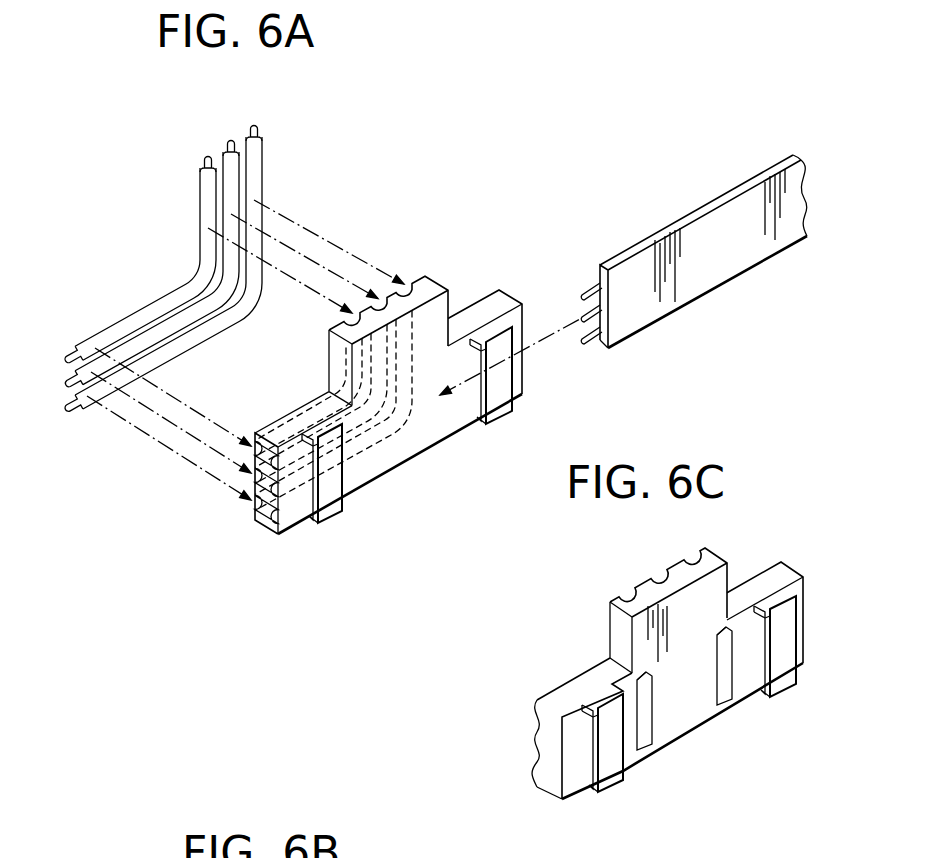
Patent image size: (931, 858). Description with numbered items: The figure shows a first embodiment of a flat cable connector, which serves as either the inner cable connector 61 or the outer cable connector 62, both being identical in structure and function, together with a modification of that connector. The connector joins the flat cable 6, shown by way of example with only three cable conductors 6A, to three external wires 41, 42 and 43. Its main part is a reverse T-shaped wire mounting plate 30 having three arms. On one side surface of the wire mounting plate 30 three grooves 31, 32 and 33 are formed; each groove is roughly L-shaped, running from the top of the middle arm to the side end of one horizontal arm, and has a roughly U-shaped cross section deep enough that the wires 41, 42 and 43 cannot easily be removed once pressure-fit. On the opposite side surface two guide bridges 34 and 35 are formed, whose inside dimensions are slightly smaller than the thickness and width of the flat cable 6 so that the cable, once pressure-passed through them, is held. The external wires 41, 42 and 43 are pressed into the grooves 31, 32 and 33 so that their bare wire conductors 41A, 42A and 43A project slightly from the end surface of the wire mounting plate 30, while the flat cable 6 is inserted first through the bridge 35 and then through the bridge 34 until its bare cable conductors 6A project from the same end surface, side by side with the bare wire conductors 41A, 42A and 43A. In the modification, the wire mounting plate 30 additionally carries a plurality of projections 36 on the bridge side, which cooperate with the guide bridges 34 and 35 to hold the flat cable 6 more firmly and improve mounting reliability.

In FIG. 6A, the flat cable 6 is at (685, 238).
In FIG. 6A, the cable conductors 6A is at (591, 286).
In FIG. 6A, the wire mounting plate 30 is at (346, 383).
In FIG. 6C, the wire mounting plate 30 is at (672, 650).
In FIG. 6A, the groove 31 is at (252, 453).
In FIG. 6A, the groove 32 is at (252, 483).
In FIG. 6A, the groove 33 is at (252, 508).
In FIG. 6A, the guide bridge 34 is at (320, 527).
In FIG. 6C, the guide bridge 34 is at (616, 784).
In FIG. 6A, the guide bridge 35 is at (491, 426).
In FIG. 6C, the guide bridge 35 is at (787, 698).
In FIG. 6C, the projections 36 is at (720, 698).
In FIG. 6A, the external wire 41 is at (140, 249).
In FIG. 6A, the external wire 42 is at (125, 252).
In FIG. 6A, the external wire 43 is at (183, 293).
In FIG. 6A, the bare wire conductor 41A is at (70, 352).
In FIG. 6A, the bare wire conductor 42A is at (69, 380).
In FIG. 6A, the bare wire conductor 43A is at (71, 409).
In FIG. 6A, the inner cable connector 61 is at (350, 347).
In FIG. 6A, the outer cable connector 62 is at (350, 347).